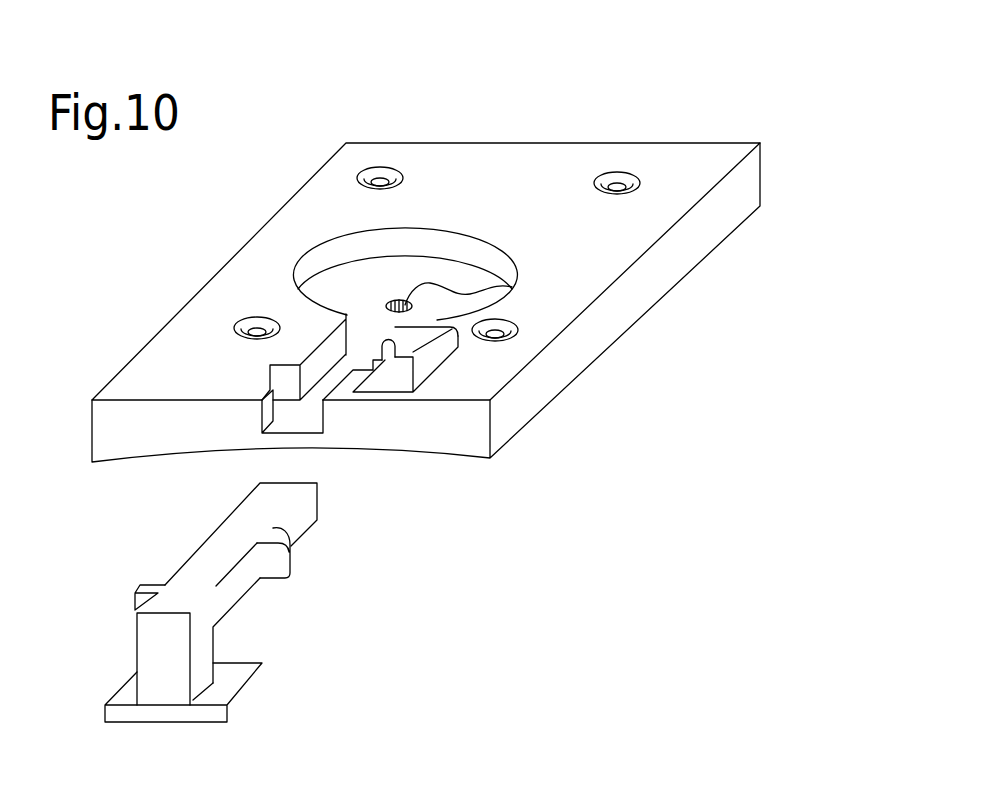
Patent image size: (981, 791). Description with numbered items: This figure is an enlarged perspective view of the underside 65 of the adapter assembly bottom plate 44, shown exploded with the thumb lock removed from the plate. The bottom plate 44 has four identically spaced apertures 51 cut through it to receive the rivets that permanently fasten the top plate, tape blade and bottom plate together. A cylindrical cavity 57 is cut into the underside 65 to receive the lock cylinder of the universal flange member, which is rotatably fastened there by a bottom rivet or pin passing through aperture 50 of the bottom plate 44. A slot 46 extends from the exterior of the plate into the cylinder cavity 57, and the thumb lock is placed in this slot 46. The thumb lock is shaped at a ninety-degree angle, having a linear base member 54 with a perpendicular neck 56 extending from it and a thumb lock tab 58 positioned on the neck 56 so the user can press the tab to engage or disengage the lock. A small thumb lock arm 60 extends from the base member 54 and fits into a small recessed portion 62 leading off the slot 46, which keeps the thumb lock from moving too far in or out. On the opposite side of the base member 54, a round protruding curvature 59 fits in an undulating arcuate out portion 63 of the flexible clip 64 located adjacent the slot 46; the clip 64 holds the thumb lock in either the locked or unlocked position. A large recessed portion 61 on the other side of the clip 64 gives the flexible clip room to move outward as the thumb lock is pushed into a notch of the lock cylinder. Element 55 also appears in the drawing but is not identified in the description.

The bottom plate 44 is at (762, 163).
The underside 65 is at (707, 153).
The apertures 51 is at (362, 178).
The cylindrical cavity 57 is at (343, 298).
The aperture 50 is at (497, 287).
The flexible clip 64 is at (389, 345).
The recessed portion 62 is at (262, 382).
The slot 46 is at (297, 423).
The undulating arcuate out portion 63 is at (490, 400).
The large recessed portion 61 is at (420, 373).
The arm 55 is at (317, 487).
The round protruding curvature 59 is at (280, 560).
The base member 54 is at (198, 592).
The thumb lock arm 60 is at (134, 593).
The neck 56 is at (148, 663).
The thumb lock tab 58 is at (228, 683).